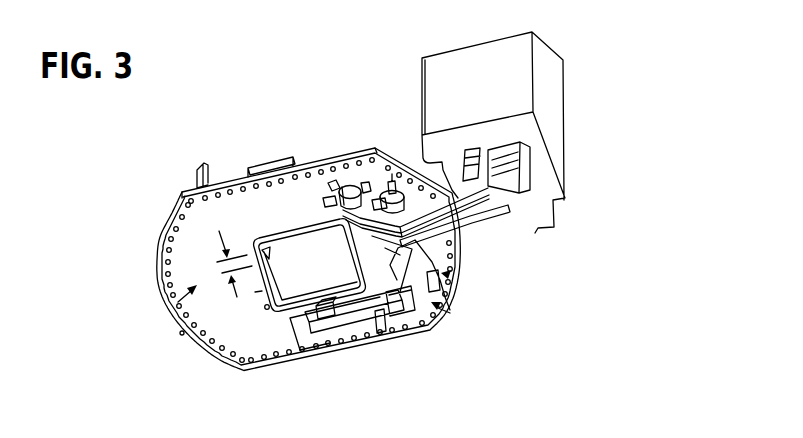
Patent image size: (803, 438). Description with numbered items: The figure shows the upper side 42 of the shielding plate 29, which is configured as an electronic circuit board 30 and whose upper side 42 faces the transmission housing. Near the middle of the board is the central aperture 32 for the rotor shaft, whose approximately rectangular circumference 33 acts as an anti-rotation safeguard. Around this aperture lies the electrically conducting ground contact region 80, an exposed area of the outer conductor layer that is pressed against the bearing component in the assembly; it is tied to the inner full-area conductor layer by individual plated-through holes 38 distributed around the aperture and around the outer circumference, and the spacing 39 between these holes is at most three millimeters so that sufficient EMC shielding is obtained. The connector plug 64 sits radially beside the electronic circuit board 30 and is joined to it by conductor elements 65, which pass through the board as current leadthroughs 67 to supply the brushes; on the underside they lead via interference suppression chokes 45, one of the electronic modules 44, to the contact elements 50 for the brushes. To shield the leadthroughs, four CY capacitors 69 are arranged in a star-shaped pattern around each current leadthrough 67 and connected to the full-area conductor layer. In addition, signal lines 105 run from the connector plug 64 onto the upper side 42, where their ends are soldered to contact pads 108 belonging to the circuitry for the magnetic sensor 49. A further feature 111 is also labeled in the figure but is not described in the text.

The shielding plate 29 is at (202, 246).
The electronic circuit board 30 is at (202, 246).
The central aperture 32 is at (405, 325).
The rectangular circumference 33 is at (341, 305).
The plated-through holes 38 is at (320, 300).
The spacing 39 is at (217, 262).
The upper side 42 is at (178, 302).
The electronic modules 44 is at (322, 288).
The interference suppression choke 45 is at (264, 158).
The magnetic sensor 49 is at (322, 288).
The contact elements 50 is at (193, 181).
The connector plug 64 is at (547, 108).
The conductor elements 65 is at (510, 192).
The current leadthroughs 67 is at (333, 184).
The CY capacitors 69 is at (381, 191).
The ground contact region 80 is at (262, 291).
The signal lines 105 is at (470, 233).
The contact pads 108 is at (449, 275).
The edge 111 is at (450, 313).